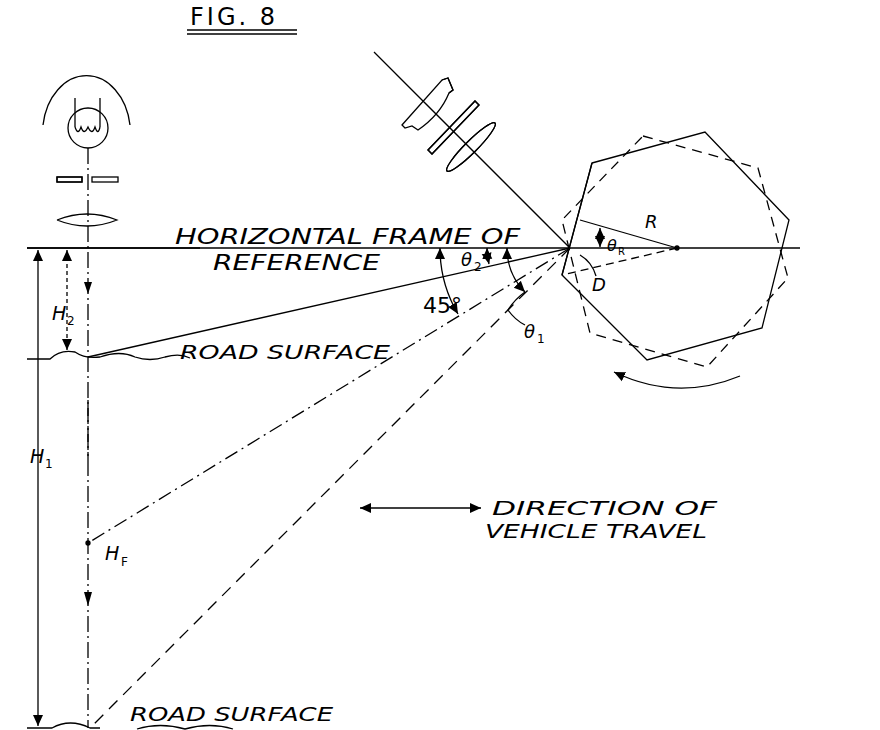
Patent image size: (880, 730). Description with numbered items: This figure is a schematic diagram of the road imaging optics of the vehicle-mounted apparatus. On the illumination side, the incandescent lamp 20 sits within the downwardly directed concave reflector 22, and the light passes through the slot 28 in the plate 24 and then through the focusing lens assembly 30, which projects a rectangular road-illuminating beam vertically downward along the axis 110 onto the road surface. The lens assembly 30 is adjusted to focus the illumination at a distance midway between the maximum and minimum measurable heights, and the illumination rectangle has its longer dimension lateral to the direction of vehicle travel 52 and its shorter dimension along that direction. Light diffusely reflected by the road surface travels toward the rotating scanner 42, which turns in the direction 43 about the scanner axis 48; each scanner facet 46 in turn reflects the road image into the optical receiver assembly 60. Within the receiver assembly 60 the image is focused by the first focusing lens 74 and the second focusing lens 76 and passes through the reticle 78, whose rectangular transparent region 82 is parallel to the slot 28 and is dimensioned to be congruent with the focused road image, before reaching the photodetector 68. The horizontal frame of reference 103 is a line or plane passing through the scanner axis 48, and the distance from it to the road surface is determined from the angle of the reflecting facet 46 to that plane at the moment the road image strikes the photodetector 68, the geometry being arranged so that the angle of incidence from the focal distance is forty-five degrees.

The incandescent lamp 20 is at (100, 110).
The concave reflector 22 is at (107, 72).
The plate 24 is at (118, 180).
The slot 28 is at (82, 177).
The focusing lens assembly 30 is at (113, 217).
The scanner 42 is at (775, 139).
The direction of rotation 43 is at (648, 387).
The scanner facet 46 is at (590, 163).
The scanner axis 48 is at (679, 246).
The direction of vehicle travel 52 is at (421, 507).
The optical receiver assembly 60 is at (436, 73).
The photodetector 68 is at (457, 93).
The first focusing lens 74 is at (490, 126).
The second focusing lens 76 is at (490, 126).
The reticle 78 is at (482, 102).
The rectangular transparent region 82 is at (452, 122).
The horizontal frame of reference 103 is at (133, 250).
The beam axis 110 is at (88, 428).